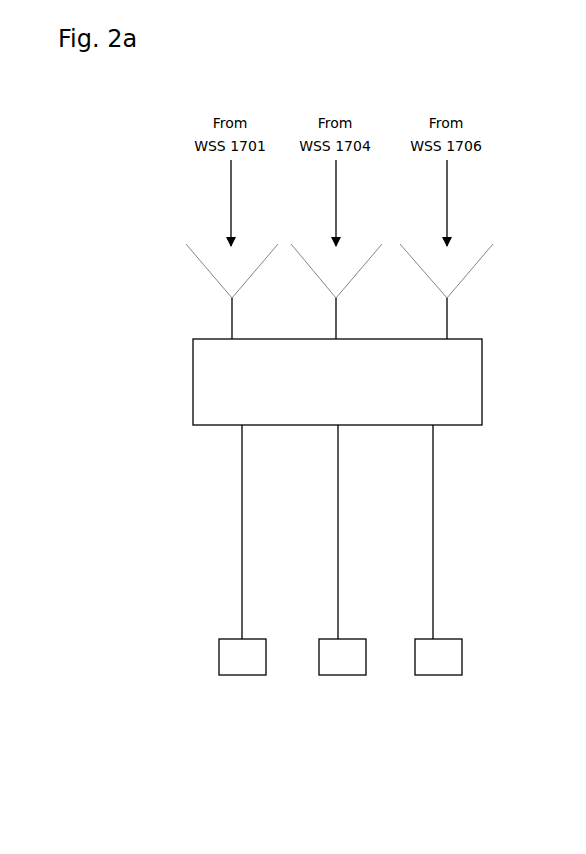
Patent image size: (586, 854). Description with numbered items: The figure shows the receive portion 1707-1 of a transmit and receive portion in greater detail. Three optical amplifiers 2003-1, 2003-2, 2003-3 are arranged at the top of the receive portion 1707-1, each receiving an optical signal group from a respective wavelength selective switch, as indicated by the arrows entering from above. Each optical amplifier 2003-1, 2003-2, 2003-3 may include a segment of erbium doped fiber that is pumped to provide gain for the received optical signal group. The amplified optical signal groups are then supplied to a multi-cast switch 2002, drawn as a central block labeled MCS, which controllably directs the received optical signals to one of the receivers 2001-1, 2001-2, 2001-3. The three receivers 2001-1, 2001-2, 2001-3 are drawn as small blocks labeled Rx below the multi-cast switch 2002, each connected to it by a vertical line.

The receive portion 1707-1 is at (140, 115).
The optical amplifier 2003-1 is at (210, 273).
The optical amplifier 2003-2 is at (313, 247).
The optical amplifier 2003-3 is at (463, 244).
The multi-cast switch 2002 is at (193, 404).
The receiver 2001-1 is at (227, 639).
The receiver 2001-2 is at (344, 639).
The receiver 2001-3 is at (440, 639).